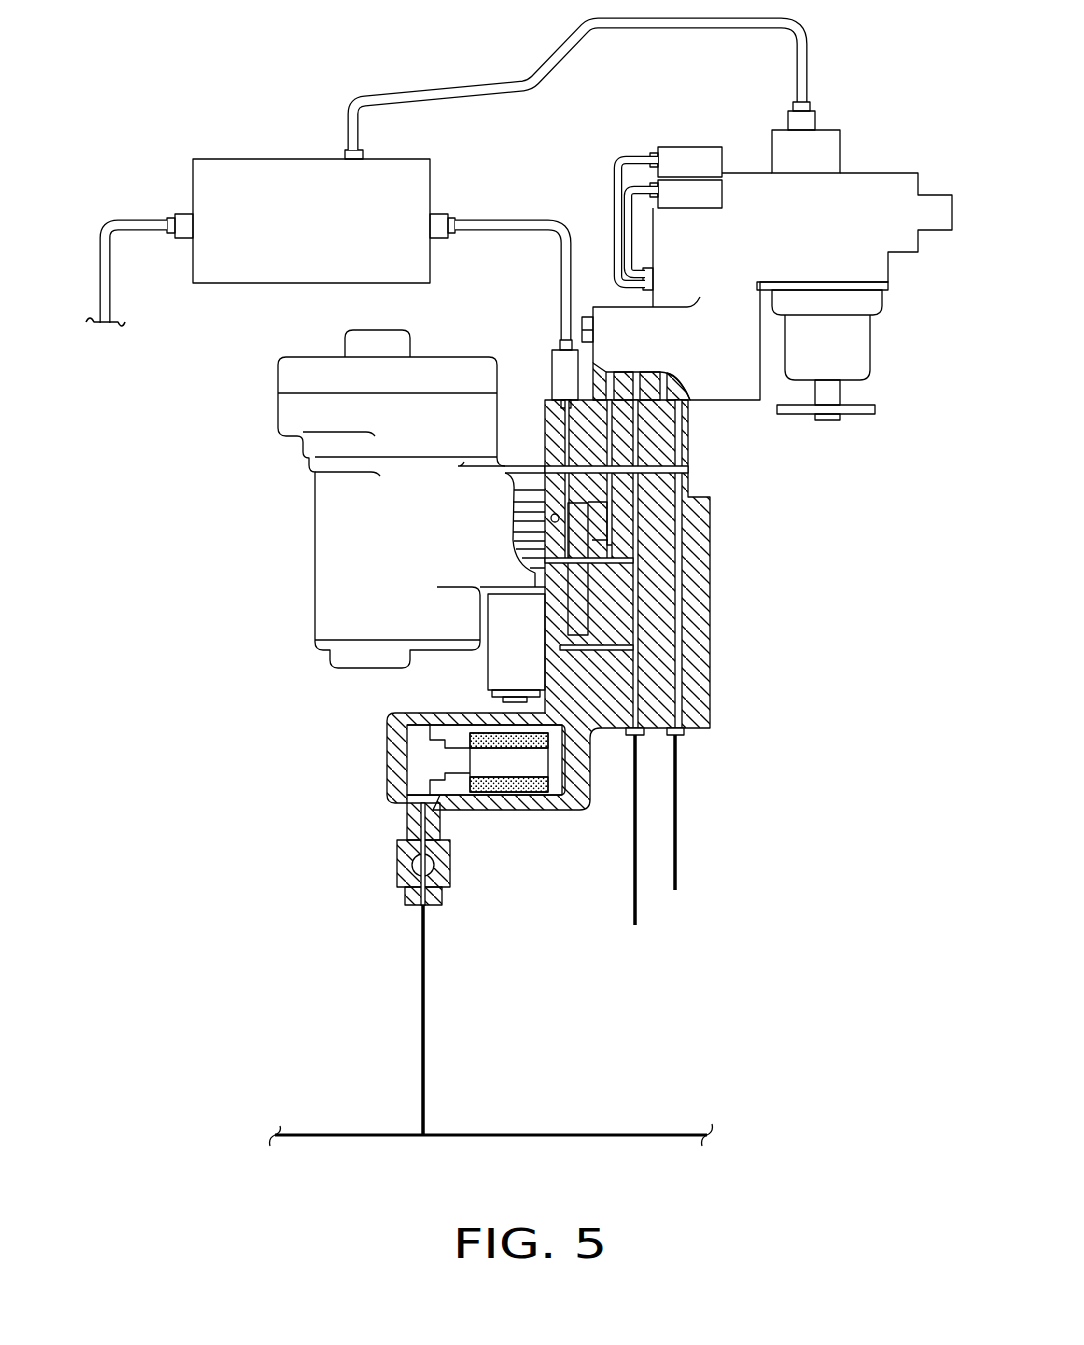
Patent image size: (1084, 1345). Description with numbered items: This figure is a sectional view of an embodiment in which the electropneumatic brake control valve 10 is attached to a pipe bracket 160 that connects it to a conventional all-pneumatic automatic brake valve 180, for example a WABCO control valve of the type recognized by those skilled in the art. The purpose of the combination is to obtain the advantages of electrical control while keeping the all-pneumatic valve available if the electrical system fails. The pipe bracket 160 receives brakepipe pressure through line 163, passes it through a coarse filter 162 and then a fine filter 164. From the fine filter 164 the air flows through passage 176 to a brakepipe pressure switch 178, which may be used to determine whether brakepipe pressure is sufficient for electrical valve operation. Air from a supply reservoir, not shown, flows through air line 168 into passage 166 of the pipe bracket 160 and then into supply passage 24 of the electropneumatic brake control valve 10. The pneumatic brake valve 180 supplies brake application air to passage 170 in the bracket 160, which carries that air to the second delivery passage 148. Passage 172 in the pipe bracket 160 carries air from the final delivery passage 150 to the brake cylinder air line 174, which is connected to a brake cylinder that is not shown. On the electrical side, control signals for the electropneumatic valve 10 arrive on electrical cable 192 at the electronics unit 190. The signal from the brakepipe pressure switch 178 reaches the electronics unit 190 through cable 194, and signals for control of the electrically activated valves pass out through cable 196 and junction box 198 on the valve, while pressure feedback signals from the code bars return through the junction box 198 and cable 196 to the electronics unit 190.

The electropneumatic brake control valve 10 is at (873, 141).
The supply passage 24 is at (698, 398).
The second delivery passage 148 is at (611, 372).
The final delivery passage 150 is at (649, 372).
The pipe bracket 160 is at (695, 702).
The coarse filter 162 is at (397, 856).
The line 163 is at (420, 1021).
The fine filter 164 is at (513, 790).
The passage 166 is at (672, 652).
The air line 168 is at (678, 850).
The passage 170 is at (608, 455).
The passage 172 is at (635, 609).
The brake cylinder air line 174 is at (633, 900).
The passage 176 is at (488, 680).
The brakepipe pressure switch 178 is at (557, 362).
The pneumatic automatic brake valve 180 is at (325, 530).
The electronics unit 190 is at (325, 268).
The electrical cable 192 is at (113, 301).
The cable 194 is at (521, 218).
The cable 196 is at (490, 86).
The junction box 198 is at (772, 138).